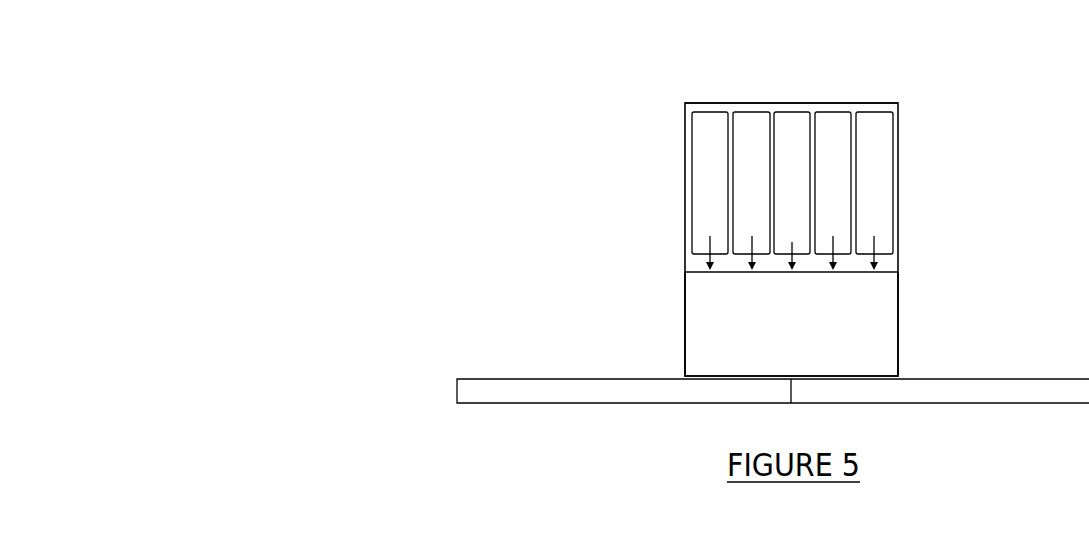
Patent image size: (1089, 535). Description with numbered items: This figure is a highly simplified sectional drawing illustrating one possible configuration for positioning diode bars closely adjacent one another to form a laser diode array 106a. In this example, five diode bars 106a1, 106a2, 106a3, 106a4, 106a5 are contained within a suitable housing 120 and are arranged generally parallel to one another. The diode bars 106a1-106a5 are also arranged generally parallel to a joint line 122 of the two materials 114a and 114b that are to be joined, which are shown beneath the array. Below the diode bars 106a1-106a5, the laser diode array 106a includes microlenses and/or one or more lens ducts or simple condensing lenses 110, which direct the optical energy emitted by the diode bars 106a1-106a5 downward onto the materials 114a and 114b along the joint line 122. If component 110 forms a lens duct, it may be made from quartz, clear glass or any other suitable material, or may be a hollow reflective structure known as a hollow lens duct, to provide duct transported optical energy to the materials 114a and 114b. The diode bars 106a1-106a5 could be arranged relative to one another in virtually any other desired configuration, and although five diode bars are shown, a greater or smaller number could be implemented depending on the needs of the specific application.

The laser diode array 106a is at (758, 63).
The diode bar 106a1 is at (705, 123).
The diode bar 106a2 is at (754, 177).
The diode bar 106a3 is at (793, 233).
The diode bar 106a4 is at (832, 158).
The diode bar 106a5 is at (863, 223).
The microlenses and/or lens ducts or condensing lenses 110 is at (778, 371).
The material 114a is at (600, 360).
The material 114b is at (965, 372).
The housing 120 is at (687, 248).
The joint line 122 is at (792, 384).